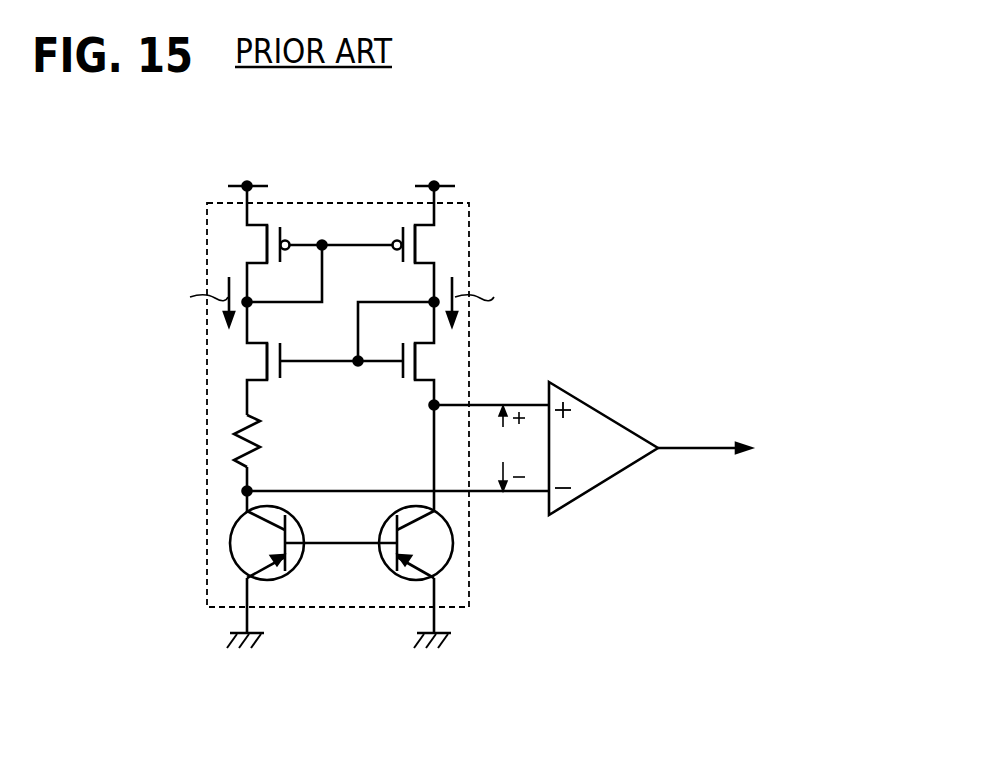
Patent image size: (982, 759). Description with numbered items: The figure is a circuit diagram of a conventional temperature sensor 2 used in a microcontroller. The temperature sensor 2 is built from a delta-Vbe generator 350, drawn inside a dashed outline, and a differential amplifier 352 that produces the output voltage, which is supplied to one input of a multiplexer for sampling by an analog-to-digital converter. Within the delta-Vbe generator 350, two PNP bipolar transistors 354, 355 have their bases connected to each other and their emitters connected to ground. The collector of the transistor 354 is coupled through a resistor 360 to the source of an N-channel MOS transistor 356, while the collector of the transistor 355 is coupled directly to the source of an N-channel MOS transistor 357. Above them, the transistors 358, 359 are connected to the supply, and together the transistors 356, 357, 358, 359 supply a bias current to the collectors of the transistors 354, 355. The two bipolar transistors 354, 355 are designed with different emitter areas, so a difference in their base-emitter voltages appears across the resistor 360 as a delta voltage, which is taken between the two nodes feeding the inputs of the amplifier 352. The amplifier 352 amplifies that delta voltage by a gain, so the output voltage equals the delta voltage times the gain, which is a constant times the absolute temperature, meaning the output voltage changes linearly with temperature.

The temperature sensor 2 is at (685, 358).
The ΔVbe generator 350 is at (469, 218).
The differential amplifier 352 is at (597, 410).
The PNP bipolar transistor 354 is at (229, 542).
The PNP bipolar transistor 355 is at (453, 543).
The N-channel MOS transistor 356 is at (250, 362).
The N-channel MOS transistor 357 is at (404, 380).
The transistor 358 is at (250, 245).
The transistor 359 is at (440, 245).
The resistor 360 is at (262, 437).